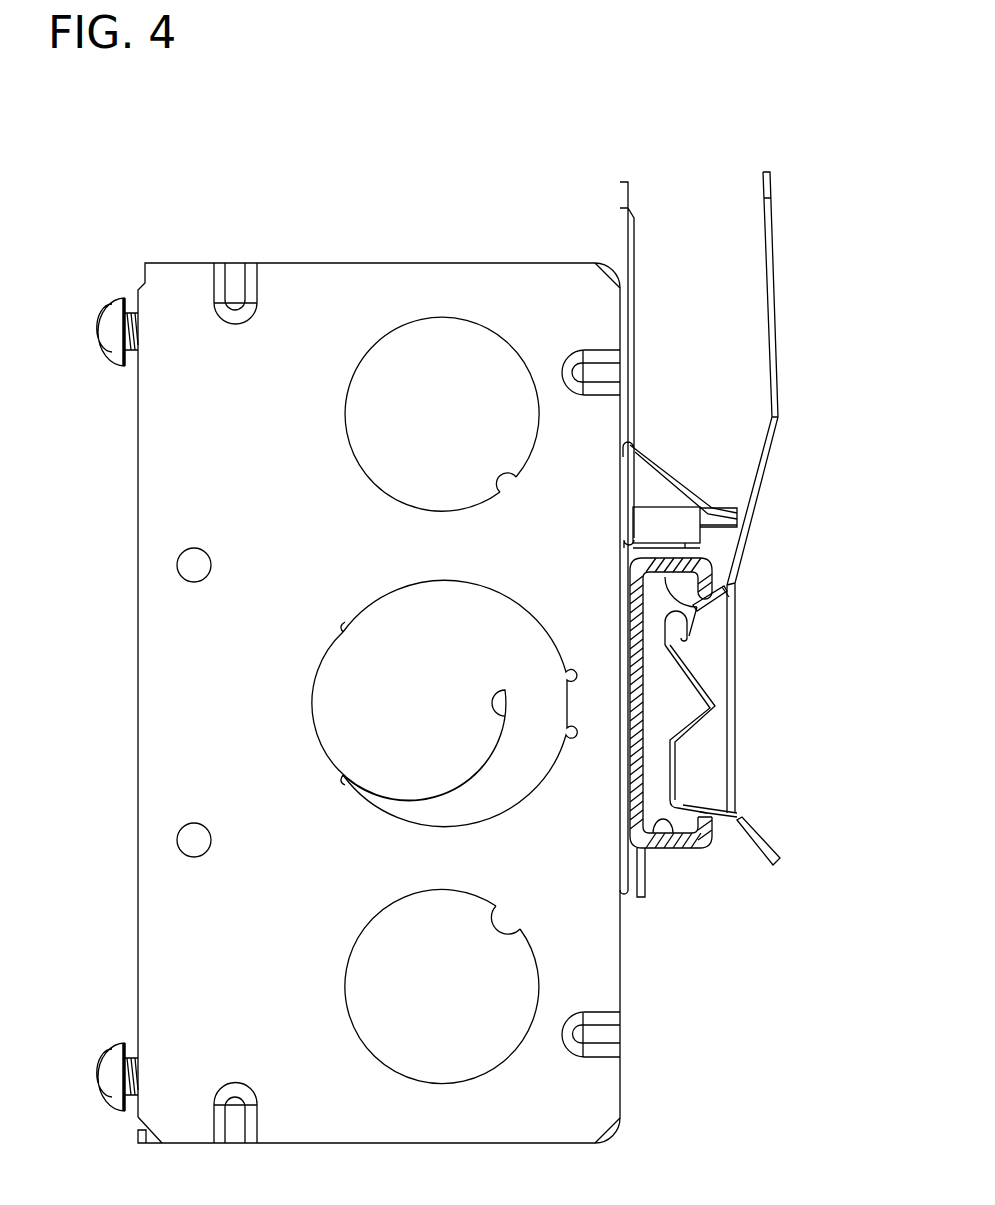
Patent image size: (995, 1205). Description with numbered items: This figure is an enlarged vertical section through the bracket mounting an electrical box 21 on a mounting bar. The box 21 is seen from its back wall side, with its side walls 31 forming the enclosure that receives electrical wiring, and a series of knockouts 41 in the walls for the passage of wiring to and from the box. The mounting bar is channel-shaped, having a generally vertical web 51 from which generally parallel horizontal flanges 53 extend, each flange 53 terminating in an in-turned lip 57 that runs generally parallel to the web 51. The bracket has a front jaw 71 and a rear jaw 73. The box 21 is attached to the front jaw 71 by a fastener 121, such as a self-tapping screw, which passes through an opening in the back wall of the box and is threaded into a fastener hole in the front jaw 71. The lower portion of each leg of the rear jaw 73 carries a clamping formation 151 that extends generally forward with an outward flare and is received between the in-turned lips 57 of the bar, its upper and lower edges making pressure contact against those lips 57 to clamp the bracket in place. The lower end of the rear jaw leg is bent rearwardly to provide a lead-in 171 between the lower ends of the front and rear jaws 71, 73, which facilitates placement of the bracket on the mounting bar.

The electrical box 21 is at (297, 260).
The side wall 31 is at (187, 692).
The knockout 41 is at (452, 433).
The web 51 is at (643, 675).
The flange 53 is at (725, 606).
The in-turned lip 57 is at (697, 597).
The front jaw 71 is at (630, 180).
The rear jaw 73 is at (775, 204).
The fastener 121 is at (672, 522).
The clamping formation 151 is at (703, 753).
The lead-in 171 is at (780, 850).